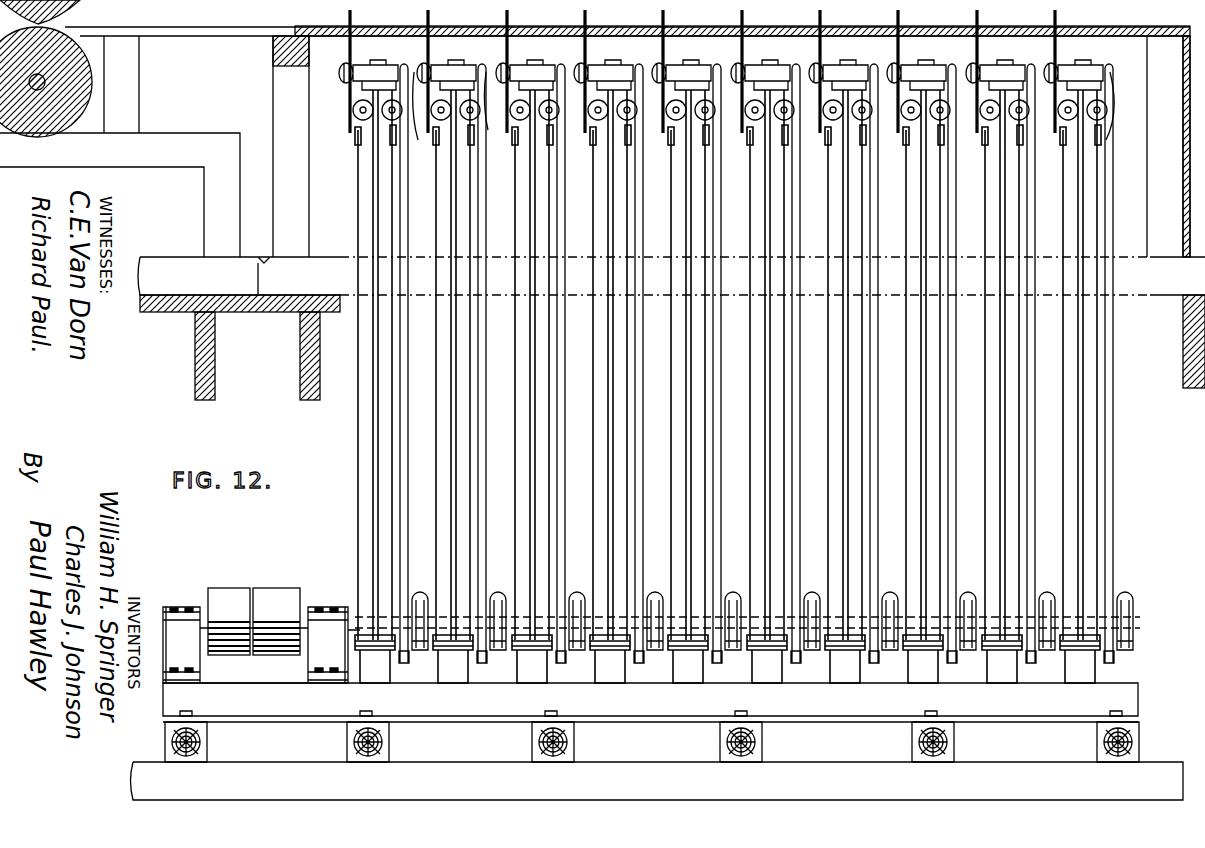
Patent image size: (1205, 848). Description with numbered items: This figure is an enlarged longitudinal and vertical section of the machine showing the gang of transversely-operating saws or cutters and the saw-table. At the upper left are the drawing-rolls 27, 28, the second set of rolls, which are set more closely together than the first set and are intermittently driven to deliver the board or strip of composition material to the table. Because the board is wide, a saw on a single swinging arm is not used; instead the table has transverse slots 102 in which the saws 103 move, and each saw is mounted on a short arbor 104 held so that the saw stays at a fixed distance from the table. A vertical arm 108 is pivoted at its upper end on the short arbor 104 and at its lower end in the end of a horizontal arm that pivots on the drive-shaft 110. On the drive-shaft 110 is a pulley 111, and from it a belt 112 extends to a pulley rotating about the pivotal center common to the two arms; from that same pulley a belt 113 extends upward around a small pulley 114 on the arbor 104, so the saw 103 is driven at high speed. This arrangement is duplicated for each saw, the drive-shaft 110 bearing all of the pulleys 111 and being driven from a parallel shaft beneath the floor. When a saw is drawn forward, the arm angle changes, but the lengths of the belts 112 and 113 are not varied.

The drawing-roll 27 is at (75, 14).
The drawing-roll 28 is at (48, 140).
The transverse slot 102 is at (1068, 30).
The saw 103 is at (980, 48).
The short arbor 104 is at (1087, 66).
The vertical arm 108 is at (1100, 184).
The drive-shaft 110 is at (252, 620).
The pulley 111 is at (228, 598).
The belt 112 is at (1130, 592).
The belt 113 is at (485, 500).
The small pulley 114 is at (1115, 72).